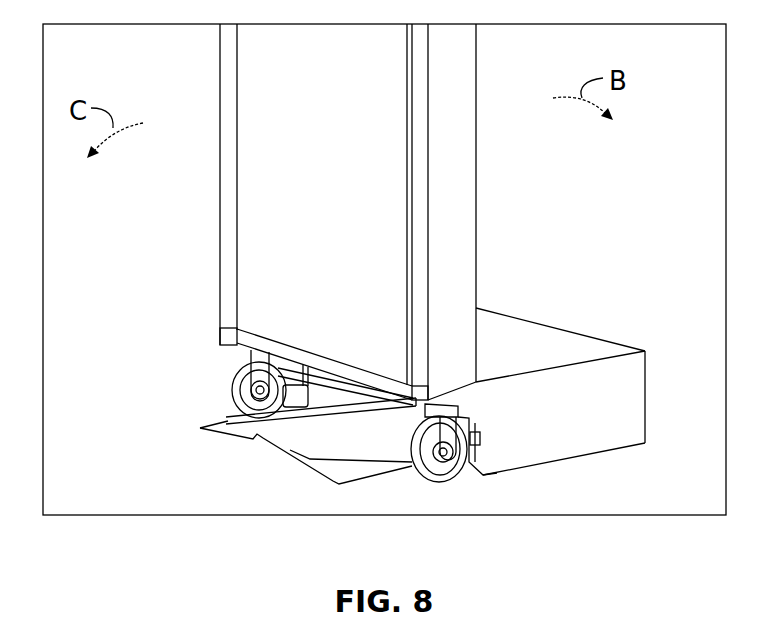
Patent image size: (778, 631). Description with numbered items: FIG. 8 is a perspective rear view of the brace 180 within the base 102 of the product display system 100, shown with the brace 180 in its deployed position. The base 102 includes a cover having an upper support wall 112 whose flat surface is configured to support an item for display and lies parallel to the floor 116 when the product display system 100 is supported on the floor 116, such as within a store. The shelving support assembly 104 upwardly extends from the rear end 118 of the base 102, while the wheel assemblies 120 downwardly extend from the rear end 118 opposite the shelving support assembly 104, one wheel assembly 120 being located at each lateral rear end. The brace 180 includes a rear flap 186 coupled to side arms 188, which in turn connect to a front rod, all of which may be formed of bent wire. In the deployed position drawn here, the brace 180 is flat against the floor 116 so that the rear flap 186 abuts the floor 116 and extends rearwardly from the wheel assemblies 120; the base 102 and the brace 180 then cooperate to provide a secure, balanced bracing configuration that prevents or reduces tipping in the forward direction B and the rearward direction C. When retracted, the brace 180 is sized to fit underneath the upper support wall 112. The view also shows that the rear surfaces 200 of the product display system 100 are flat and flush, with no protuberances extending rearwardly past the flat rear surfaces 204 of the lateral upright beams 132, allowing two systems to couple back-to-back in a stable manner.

The product display system 100 is at (172, 82).
The base 102 is at (604, 323).
The shelving support assembly 104 is at (485, 218).
The upper support wall 112 is at (543, 342).
The floor 116 is at (242, 488).
The rear end 118 is at (440, 393).
The wheel assembly 120 is at (233, 384).
The lateral upright beam 132 is at (222, 192).
The brace 180 is at (235, 454).
The rear flap 186 is at (298, 470).
The side arm 188 is at (262, 414).
The rear surface 200 is at (214, 243).
The flat rear surface 204 is at (230, 142).